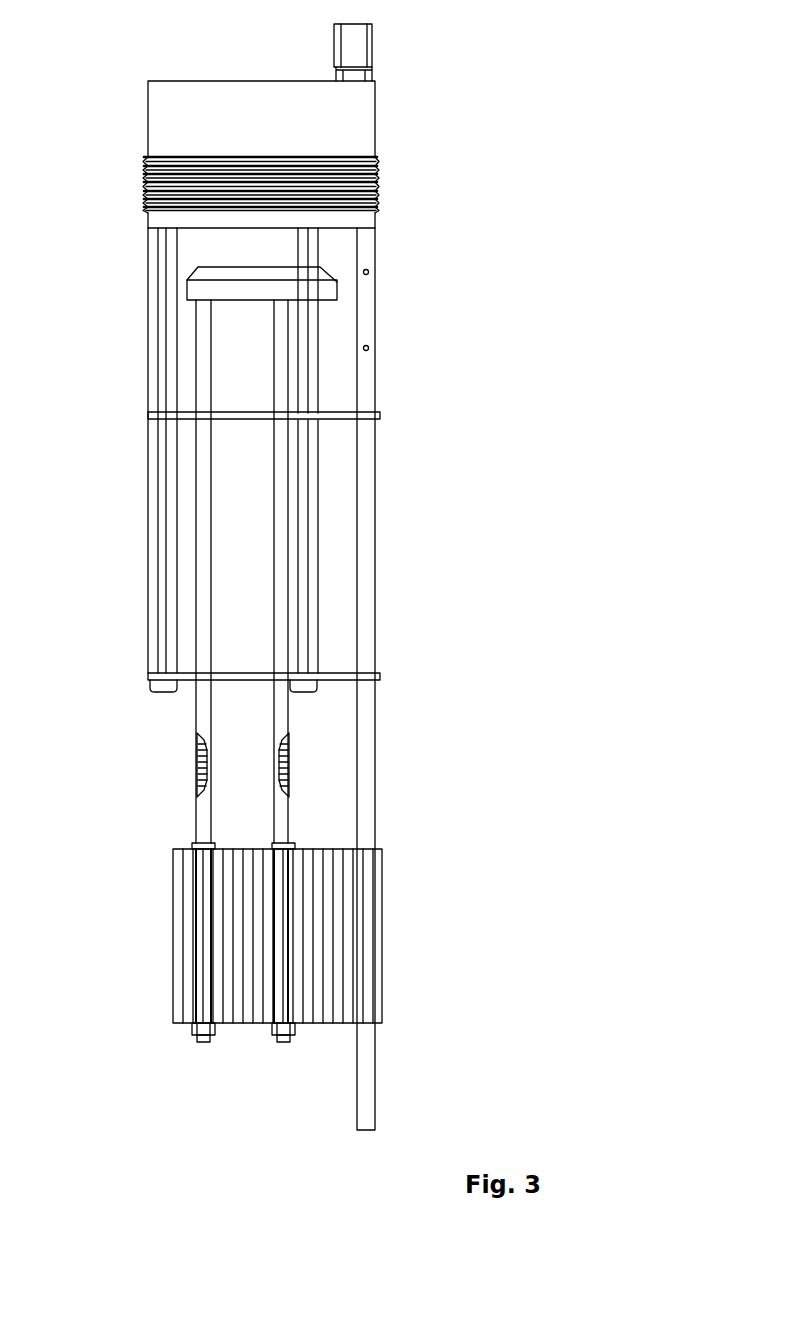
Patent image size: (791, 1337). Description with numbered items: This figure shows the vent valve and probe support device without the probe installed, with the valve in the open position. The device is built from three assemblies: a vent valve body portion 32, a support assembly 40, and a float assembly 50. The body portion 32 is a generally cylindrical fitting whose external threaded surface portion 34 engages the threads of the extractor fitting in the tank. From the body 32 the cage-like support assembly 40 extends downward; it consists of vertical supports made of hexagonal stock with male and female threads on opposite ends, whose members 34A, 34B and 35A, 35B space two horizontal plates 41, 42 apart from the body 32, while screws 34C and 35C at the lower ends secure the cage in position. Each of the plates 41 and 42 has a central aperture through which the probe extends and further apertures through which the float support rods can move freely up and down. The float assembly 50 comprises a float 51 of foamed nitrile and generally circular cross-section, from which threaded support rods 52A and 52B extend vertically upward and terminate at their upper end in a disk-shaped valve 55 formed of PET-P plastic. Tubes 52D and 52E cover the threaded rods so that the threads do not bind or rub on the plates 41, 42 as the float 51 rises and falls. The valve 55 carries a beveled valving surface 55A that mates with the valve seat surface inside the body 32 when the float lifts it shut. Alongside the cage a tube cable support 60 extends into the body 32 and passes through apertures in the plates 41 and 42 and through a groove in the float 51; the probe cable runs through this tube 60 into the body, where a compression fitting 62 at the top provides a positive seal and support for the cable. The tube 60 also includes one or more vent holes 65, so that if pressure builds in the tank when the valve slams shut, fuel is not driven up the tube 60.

The vent valve body portion 32 is at (375, 125).
The compression fitting 62 is at (372, 44).
The external threaded surface portion 34 is at (378, 195).
The support member 34A is at (148, 348).
The support member 34B is at (148, 600).
The screw 34C is at (152, 693).
The support member 35A is at (318, 395).
The support member 35B is at (318, 570).
The screw 35C is at (318, 690).
The support assembly 40 is at (391, 644).
The horizontal plate 41 is at (380, 415).
The horizontal plate 42 is at (380, 677).
The float assembly 50 is at (232, 1071).
The float 51 is at (173, 928).
The threaded support rod 52A is at (197, 790).
The threaded support rod 52B is at (289, 790).
The tube 52D is at (196, 722).
The tube 52E is at (289, 735).
The valve 55 is at (187, 292).
The beveled valving surface 55A is at (195, 270).
The tube cable support 60 is at (375, 757).
The vent holes 65 is at (369, 348).